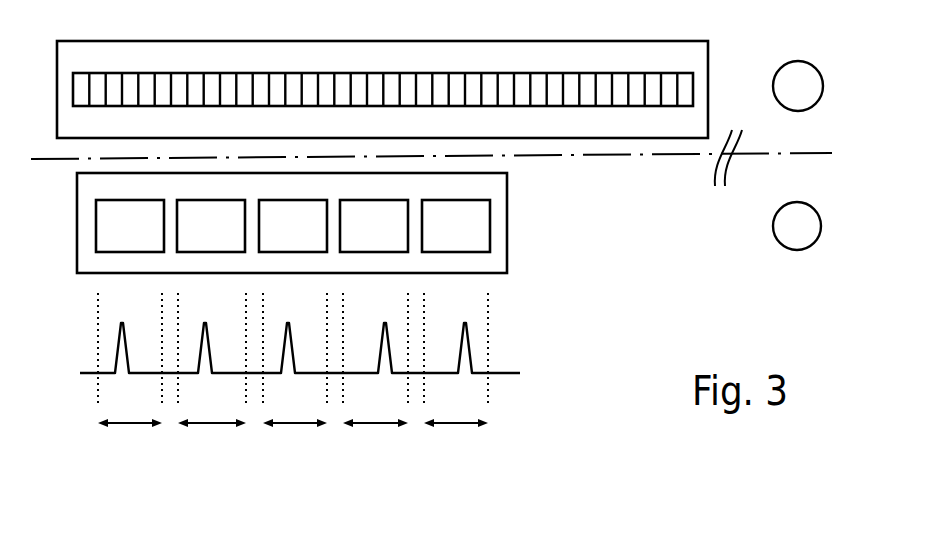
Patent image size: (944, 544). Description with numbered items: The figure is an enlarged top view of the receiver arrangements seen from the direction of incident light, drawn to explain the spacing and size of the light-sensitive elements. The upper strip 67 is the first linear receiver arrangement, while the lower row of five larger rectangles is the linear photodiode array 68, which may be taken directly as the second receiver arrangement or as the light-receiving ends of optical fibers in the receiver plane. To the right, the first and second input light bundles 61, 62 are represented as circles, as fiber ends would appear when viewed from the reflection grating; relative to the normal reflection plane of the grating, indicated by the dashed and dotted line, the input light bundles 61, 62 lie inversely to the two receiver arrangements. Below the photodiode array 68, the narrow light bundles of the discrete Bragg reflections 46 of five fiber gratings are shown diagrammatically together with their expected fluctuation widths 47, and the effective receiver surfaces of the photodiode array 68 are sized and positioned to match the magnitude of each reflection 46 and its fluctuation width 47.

The linear image sensor array 67 is at (315, 40).
The second input light bundle 62 is at (800, 61).
The first input light bundle 61 is at (795, 250).
The linear photodiode array 68 is at (508, 225).
The Bragg reflections 46 is at (470, 362).
The fluctuation widths 47 is at (460, 418).